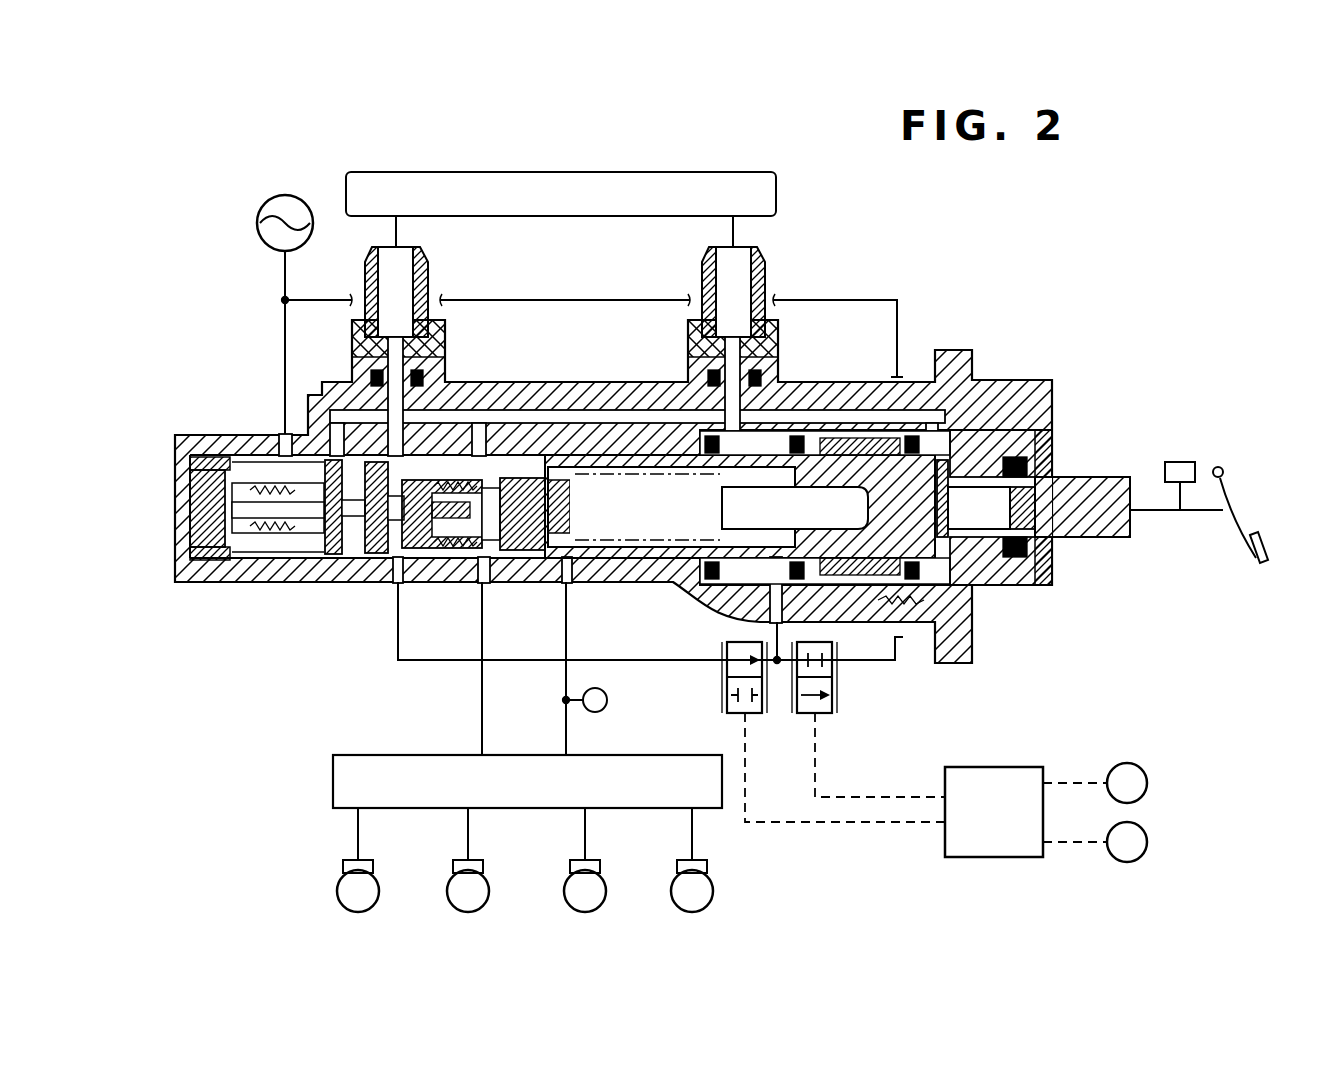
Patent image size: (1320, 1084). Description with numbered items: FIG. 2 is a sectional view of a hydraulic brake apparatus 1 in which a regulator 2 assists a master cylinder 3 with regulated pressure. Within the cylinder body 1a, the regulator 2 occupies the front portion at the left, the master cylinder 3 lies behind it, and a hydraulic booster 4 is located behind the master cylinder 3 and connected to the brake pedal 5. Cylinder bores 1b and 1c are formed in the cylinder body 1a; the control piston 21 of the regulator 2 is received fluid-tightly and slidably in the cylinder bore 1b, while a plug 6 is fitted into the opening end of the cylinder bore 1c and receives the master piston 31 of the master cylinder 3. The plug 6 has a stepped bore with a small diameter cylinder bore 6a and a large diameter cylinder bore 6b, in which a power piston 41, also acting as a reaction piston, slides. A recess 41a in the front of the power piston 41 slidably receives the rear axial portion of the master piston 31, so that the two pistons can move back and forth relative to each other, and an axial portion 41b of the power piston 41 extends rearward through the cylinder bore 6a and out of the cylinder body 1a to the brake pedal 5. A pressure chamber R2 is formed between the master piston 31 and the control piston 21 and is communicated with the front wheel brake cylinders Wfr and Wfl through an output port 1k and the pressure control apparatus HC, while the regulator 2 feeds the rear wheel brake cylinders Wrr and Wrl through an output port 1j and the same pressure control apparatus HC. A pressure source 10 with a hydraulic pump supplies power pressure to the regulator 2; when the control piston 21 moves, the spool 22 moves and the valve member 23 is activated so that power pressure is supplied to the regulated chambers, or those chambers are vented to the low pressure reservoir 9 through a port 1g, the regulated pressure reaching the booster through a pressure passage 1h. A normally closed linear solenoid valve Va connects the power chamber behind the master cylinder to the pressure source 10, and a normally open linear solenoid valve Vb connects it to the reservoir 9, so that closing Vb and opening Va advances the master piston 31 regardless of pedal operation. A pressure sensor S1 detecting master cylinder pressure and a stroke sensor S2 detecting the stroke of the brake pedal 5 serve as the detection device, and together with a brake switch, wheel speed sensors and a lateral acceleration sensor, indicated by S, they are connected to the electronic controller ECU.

The hydraulic brake apparatus 1 is at (1076, 353).
The cylinder body 1a is at (296, 574).
The cylinder bore 1b is at (637, 552).
The cylinder bore 1c is at (745, 578).
The port 1g is at (425, 408).
The pressure passage 1h is at (580, 417).
The output port 1j is at (478, 580).
The output port 1k is at (562, 586).
The regulator 2 is at (333, 590).
The master cylinder 3 is at (809, 368).
The hydraulic booster 4 is at (1062, 571).
The brake pedal 5 is at (1237, 516).
The plug 6 is at (1034, 447).
The small diameter cylinder bore 6a is at (1040, 487).
The large diameter cylinder bore 6b is at (843, 453).
The low pressure reservoir 9 is at (600, 198).
The pressure source 10 is at (273, 236).
The control piston 21 is at (522, 544).
The spool 22 is at (433, 548).
The valve member 23 is at (262, 545).
The master piston 31 is at (888, 465).
The power piston 41 is at (947, 548).
The recess 41a is at (1053, 532).
The axial portion 41b is at (1097, 528).
The pressure chamber R2 is at (581, 584).
The pressure sensor S1 is at (601, 708).
The stroke sensor S2 is at (1181, 462).
The linear solenoid valve Va is at (837, 688).
The linear solenoid valve Vb is at (725, 685).
The pressure control apparatus HC is at (345, 781).
The electronic controller ECU is at (894, 785).
The sensors S is at (1095, 812).
The wheel brake cylinder Wrr is at (344, 863).
The wheel brake cylinder Wrl is at (455, 863).
The wheel brake cylinder Wfr is at (573, 863).
The wheel brake cylinder Wfl is at (680, 863).